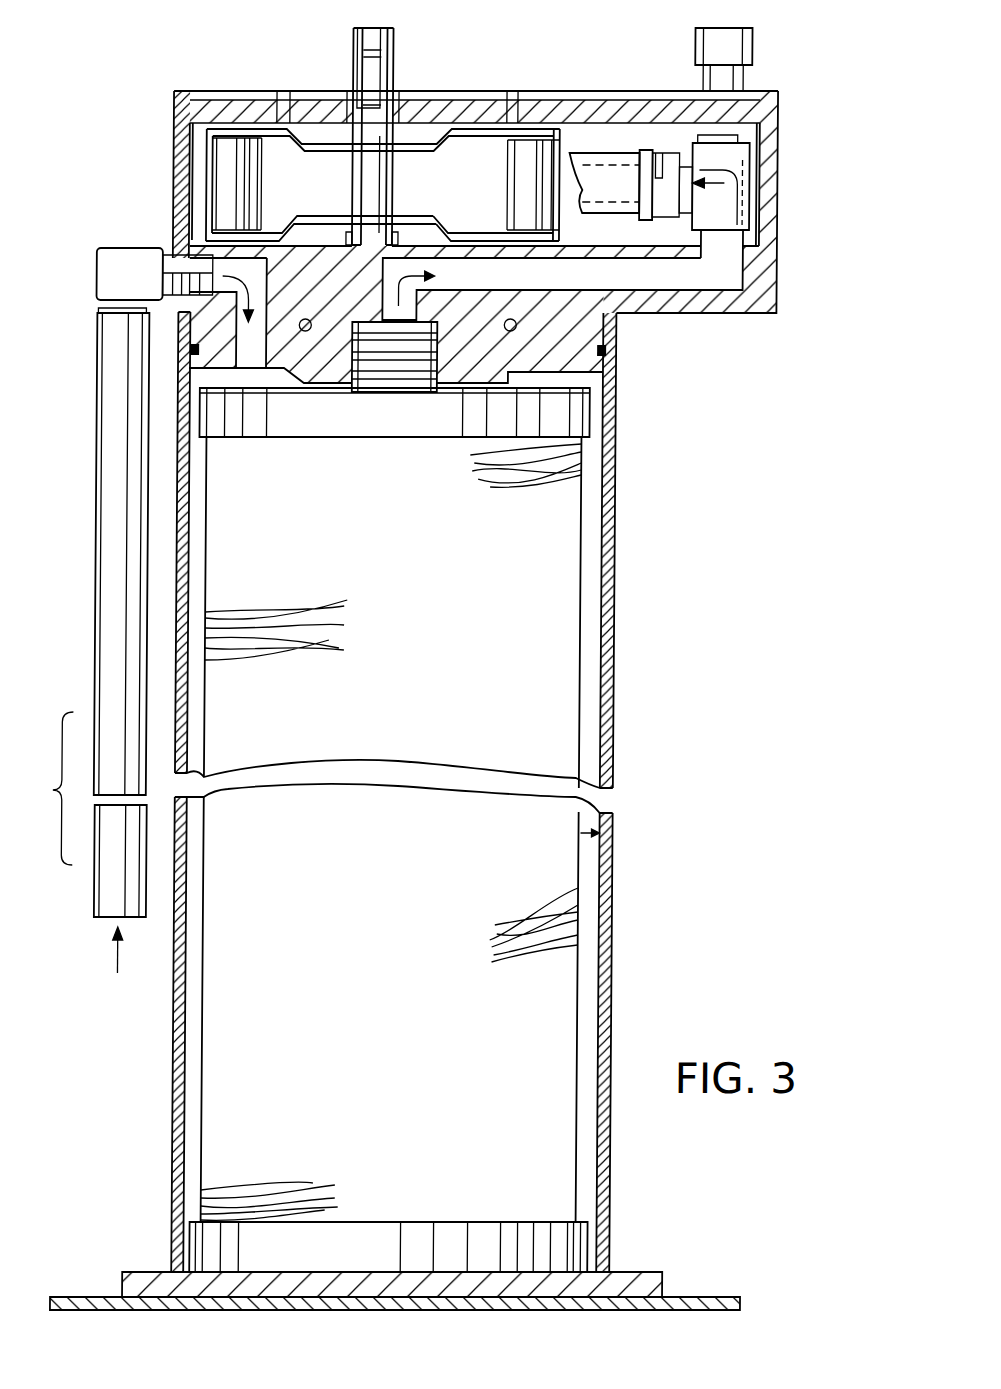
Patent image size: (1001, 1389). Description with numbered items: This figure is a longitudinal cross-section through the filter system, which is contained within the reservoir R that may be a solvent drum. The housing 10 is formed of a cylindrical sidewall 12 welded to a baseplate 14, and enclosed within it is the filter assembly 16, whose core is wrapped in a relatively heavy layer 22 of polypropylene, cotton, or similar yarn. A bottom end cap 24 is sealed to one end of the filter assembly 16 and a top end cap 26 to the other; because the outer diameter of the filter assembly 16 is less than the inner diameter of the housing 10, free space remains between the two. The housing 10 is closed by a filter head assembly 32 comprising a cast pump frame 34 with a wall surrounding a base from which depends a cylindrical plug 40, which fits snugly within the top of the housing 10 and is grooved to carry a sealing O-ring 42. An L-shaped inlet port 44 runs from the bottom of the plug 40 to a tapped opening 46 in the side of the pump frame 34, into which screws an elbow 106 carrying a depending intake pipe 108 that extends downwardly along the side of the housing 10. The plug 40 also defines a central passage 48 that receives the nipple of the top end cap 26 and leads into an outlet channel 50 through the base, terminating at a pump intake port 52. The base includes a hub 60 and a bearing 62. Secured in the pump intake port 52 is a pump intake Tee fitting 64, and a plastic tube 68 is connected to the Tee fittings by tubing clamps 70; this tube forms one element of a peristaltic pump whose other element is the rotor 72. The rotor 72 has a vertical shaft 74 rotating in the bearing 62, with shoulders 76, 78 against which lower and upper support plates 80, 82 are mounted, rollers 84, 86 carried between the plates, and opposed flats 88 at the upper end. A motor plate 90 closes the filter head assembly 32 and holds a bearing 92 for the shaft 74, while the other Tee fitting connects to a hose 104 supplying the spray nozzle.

The housing 10 is at (628, 957).
The cylindrical sidewall 12 is at (617, 882).
The baseplate 14 is at (668, 1280).
The filter assembly 16 is at (615, 827).
The layer of yarn 22 is at (616, 718).
The bottom end cap 24 is at (593, 1240).
The top end cap 26 is at (590, 412).
The filter head assembly 32 is at (165, 120).
The pump frame 34 is at (760, 188).
The cylindrical plug 40 is at (592, 325).
The sealing O-ring 42 is at (606, 350).
The L-shaped inlet port 44 is at (195, 319).
The tapped opening 46 is at (187, 250).
The central passage 48 is at (378, 385).
The outlet channel 50 is at (739, 277).
The pump intake port 52 is at (747, 243).
The hub 60 is at (434, 222).
The bearing 62 is at (369, 240).
The pump intake Tee fitting 64 is at (750, 152).
The plastic tube 68 is at (615, 152).
The tubing clamps 70 is at (652, 215).
The rotor 72 is at (437, 113).
The vertical shaft 74 is at (392, 30).
The shoulder 76 is at (367, 215).
The shoulder 78 is at (357, 152).
The lower support plate 80 is at (214, 230).
The upper support plate 82 is at (220, 140).
The roller 84 is at (210, 165).
The roller 86 is at (562, 143).
The opposed flats 88 is at (354, 36).
The motor plate 90 is at (179, 82).
The bearing 92 is at (395, 90).
The hose 104 is at (752, 47).
The elbow 106 is at (95, 283).
The intake pipe 108 is at (96, 470).
The reservoir R is at (726, 1310).